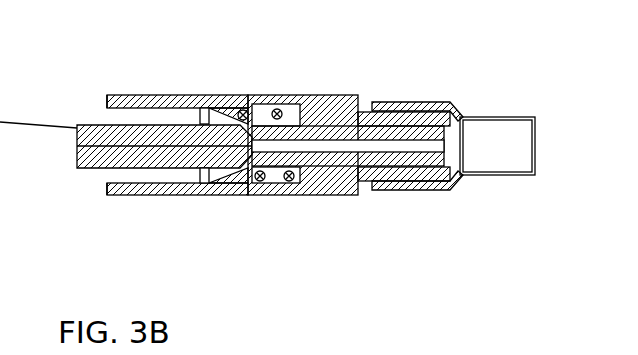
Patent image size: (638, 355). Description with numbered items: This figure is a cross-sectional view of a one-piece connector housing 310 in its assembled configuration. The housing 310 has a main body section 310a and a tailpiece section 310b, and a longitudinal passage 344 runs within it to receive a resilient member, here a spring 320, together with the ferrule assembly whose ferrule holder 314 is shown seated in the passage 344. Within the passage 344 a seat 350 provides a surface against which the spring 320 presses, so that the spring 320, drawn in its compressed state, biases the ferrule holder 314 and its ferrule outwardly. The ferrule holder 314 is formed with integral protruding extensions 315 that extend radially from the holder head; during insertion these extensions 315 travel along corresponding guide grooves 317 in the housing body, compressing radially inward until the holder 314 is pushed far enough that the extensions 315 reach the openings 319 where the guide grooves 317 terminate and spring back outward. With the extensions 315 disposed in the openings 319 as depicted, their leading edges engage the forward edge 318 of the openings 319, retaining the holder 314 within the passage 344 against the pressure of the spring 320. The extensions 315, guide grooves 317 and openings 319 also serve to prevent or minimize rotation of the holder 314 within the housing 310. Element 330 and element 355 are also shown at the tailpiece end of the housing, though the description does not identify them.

The housing 310 is at (296, 62).
The main body section 310a is at (135, 95).
The tailpiece section 310b is at (393, 102).
The ferrule holder 314 is at (322, 158).
The protruding extensions 315 is at (214, 97).
The guide grooves 317 is at (103, 102).
The forward edge 318 is at (206, 97).
The openings 319 is at (238, 97).
The spring 320 is at (287, 173).
The end sleeve 330 is at (463, 113).
The longitudinal passage 344 is at (142, 172).
The seat 350 is at (304, 110).
The seals 355 is at (433, 173).